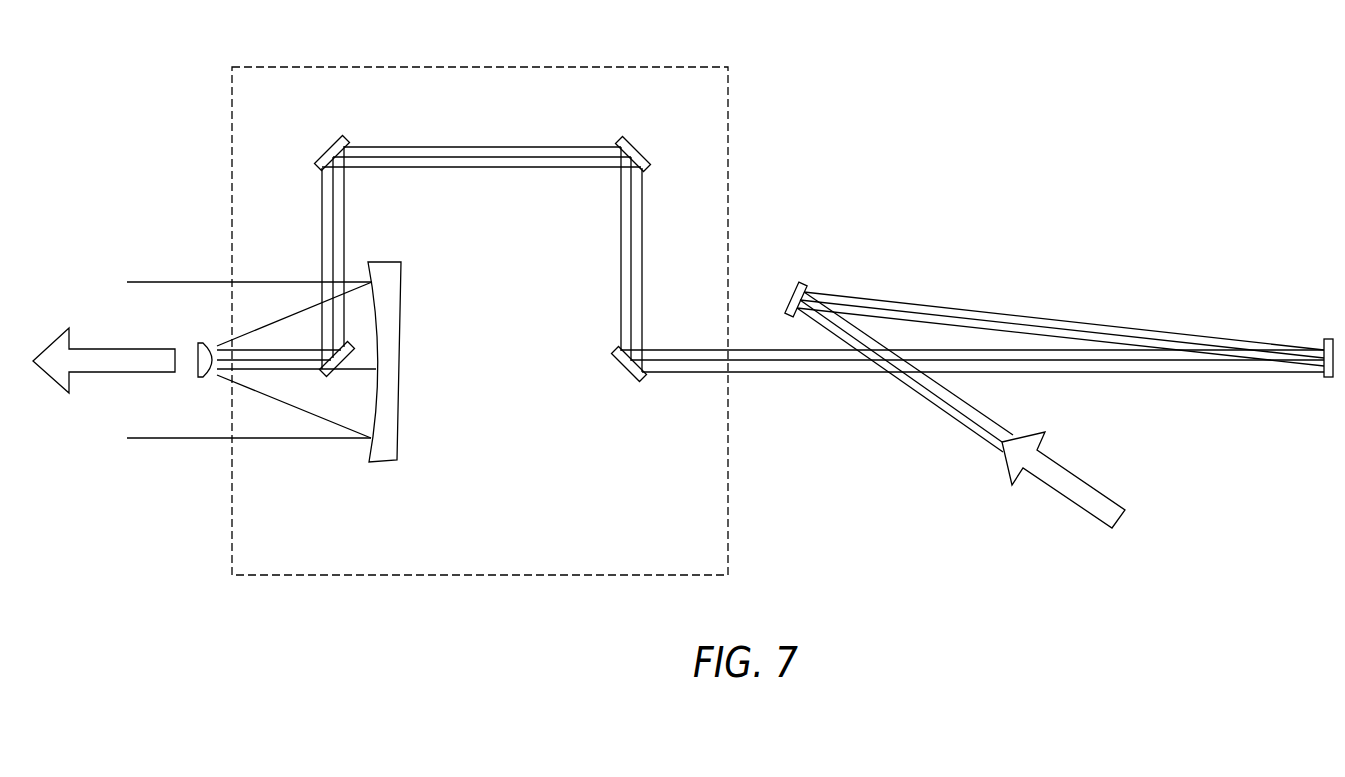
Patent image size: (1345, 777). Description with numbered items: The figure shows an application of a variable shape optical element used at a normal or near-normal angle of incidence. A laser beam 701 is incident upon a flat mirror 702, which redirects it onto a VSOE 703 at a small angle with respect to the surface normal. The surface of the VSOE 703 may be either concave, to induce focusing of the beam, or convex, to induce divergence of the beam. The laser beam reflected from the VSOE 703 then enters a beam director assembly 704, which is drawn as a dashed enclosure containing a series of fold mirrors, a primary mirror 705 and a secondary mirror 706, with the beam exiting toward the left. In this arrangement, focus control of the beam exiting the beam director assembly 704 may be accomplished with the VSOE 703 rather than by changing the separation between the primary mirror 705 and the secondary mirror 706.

The laser beam 701 is at (1072, 503).
The flat mirror 702 is at (806, 282).
The VSOE 703 is at (1328, 378).
The beam director assembly 704 is at (659, 67).
The primary mirror 705 is at (401, 430).
The secondary mirror 706 is at (205, 344).